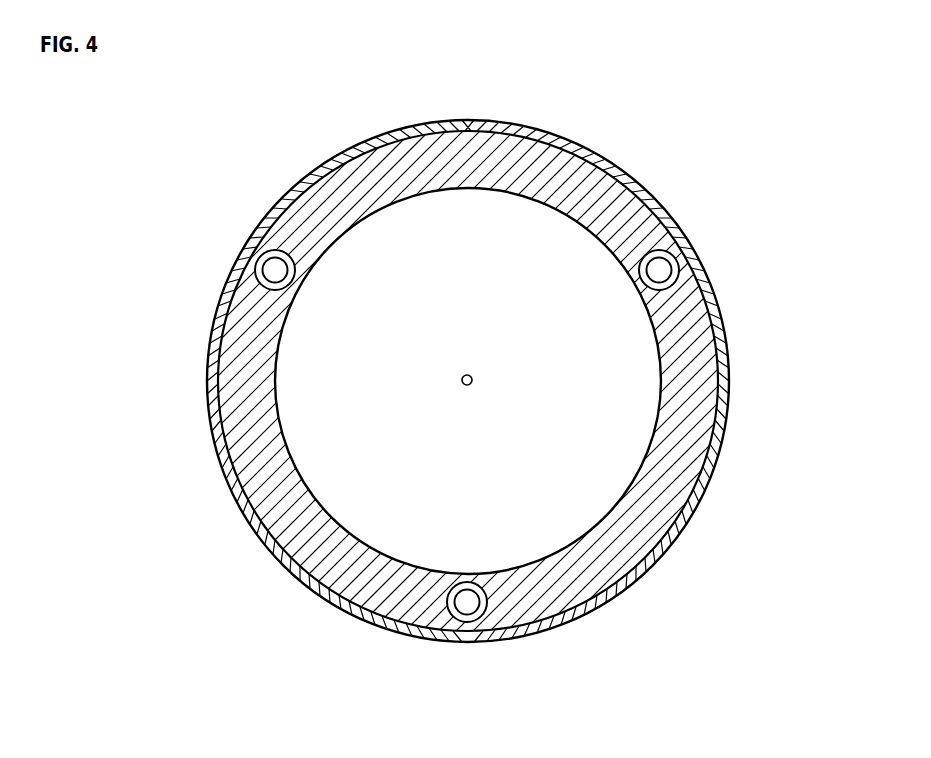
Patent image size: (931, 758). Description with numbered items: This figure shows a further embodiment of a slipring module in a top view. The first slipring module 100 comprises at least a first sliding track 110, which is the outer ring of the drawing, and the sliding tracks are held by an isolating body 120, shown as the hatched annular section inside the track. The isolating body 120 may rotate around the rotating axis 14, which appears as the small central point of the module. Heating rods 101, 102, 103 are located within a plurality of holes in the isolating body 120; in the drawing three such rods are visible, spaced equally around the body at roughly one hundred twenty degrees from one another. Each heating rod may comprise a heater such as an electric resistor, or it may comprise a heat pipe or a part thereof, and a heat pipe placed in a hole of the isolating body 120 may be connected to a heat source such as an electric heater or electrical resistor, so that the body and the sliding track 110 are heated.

The first slipring module 100 is at (678, 139).
The first sliding track 110 is at (725, 377).
The isolating body 120 is at (258, 377).
The heating rod 101 is at (276, 271).
The heating rod 102 is at (658, 269).
The heating rod 103 is at (467, 601).
The rotating axis 14 is at (473, 380).